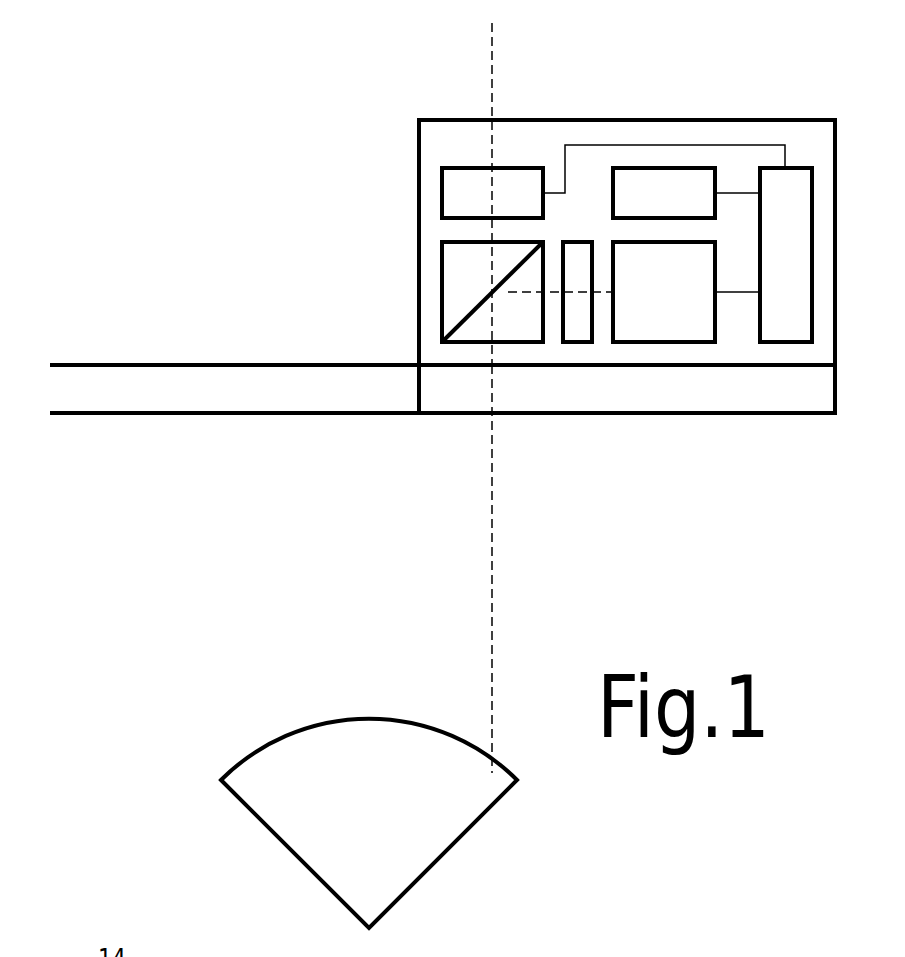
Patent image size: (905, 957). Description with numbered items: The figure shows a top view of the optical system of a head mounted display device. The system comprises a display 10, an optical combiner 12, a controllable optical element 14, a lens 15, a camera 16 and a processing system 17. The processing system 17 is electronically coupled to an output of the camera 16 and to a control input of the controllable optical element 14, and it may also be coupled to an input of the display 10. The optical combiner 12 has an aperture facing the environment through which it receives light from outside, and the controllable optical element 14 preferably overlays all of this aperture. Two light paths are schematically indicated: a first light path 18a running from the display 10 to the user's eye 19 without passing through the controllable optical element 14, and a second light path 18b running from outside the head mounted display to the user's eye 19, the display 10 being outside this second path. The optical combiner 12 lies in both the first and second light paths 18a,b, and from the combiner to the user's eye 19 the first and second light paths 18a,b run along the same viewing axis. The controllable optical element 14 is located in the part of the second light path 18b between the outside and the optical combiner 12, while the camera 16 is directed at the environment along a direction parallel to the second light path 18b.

The display 10 is at (670, 342).
The optical combiner 12 is at (442, 266).
The controllable optical element 14 is at (442, 192).
The lens 15 is at (573, 342).
The camera 16 is at (668, 167).
The processing system 17 is at (768, 342).
The first light path 18a is at (492, 45).
The second light path 18b is at (521, 292).
The first and second light paths 18a,b is at (492, 535).
The user's eye 19 is at (320, 827).